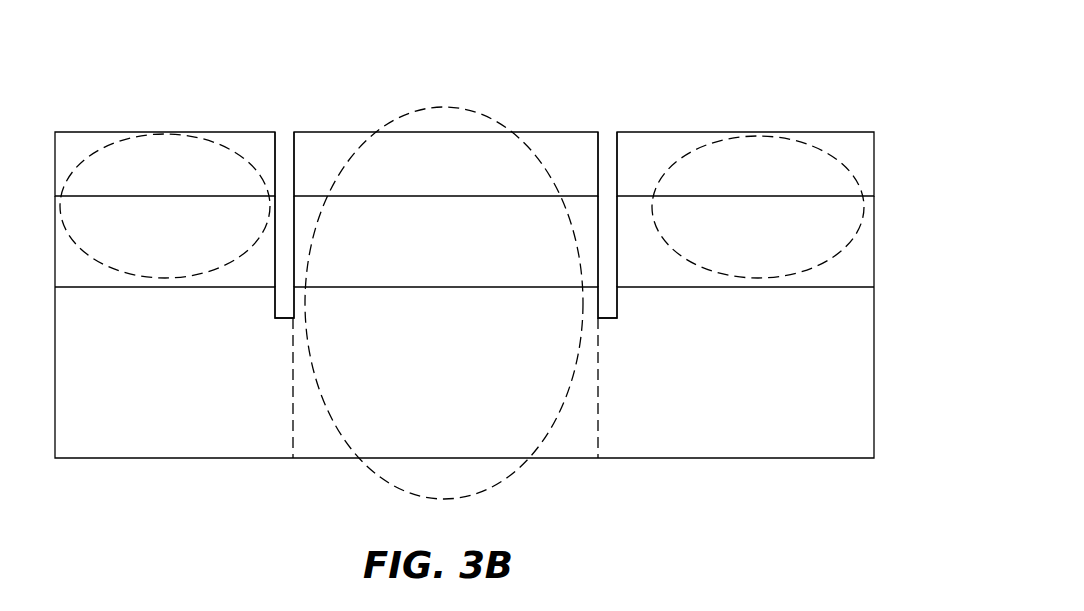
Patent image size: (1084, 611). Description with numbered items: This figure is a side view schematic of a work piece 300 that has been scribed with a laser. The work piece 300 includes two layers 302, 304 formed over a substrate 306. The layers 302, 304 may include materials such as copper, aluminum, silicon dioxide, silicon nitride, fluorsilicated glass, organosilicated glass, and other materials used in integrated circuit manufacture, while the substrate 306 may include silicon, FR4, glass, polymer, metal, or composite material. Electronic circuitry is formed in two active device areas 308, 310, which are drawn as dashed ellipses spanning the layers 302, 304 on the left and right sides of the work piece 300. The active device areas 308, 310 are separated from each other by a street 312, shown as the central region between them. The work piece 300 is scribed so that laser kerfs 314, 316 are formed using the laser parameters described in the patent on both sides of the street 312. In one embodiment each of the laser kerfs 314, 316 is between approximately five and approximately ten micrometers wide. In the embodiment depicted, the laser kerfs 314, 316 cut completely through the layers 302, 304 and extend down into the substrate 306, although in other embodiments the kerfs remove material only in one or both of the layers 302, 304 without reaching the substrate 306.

The work piece 300 is at (478, 45).
The layer 302 is at (905, 155).
The layer 304 is at (862, 252).
The substrate 306 is at (862, 348).
The active device area 308 is at (118, 140).
The active device area 310 is at (820, 148).
The street 312 is at (470, 104).
The laser kerf 314 is at (280, 152).
The laser kerf 316 is at (607, 158).